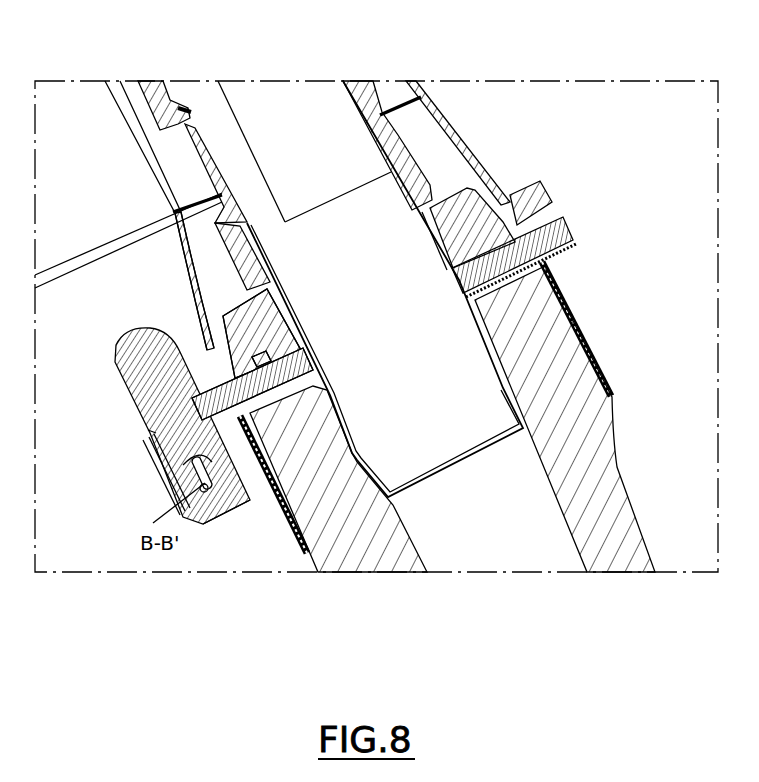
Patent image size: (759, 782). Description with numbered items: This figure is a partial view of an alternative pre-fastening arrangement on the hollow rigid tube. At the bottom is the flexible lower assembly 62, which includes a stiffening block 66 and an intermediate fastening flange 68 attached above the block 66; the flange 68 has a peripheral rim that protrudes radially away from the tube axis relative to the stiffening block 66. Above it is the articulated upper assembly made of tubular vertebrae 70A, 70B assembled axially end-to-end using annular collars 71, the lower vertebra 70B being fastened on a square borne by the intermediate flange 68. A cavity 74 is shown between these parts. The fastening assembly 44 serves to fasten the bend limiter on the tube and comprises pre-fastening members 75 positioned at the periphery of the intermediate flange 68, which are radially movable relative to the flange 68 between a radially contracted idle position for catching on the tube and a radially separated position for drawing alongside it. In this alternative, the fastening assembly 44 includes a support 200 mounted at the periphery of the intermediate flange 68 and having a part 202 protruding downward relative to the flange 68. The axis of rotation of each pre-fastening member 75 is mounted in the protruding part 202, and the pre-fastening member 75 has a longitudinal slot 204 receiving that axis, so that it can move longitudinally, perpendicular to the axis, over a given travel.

The tubular vertebra 70A is at (362, 103).
The annular collar 71 is at (527, 195).
The pre-fastening member 75 is at (119, 314).
The lower vertebra 70B is at (427, 240).
The stiffening block 66 is at (575, 456).
The longitudinal slot 204 is at (172, 476).
The support 200 is at (200, 491).
The intermediate fastening flange 68 is at (246, 421).
The cavity 74 is at (492, 535).
The protruding part 202 is at (160, 497).
The fastening assembly 44 is at (206, 546).
The flexible lower assembly 62 is at (285, 592).